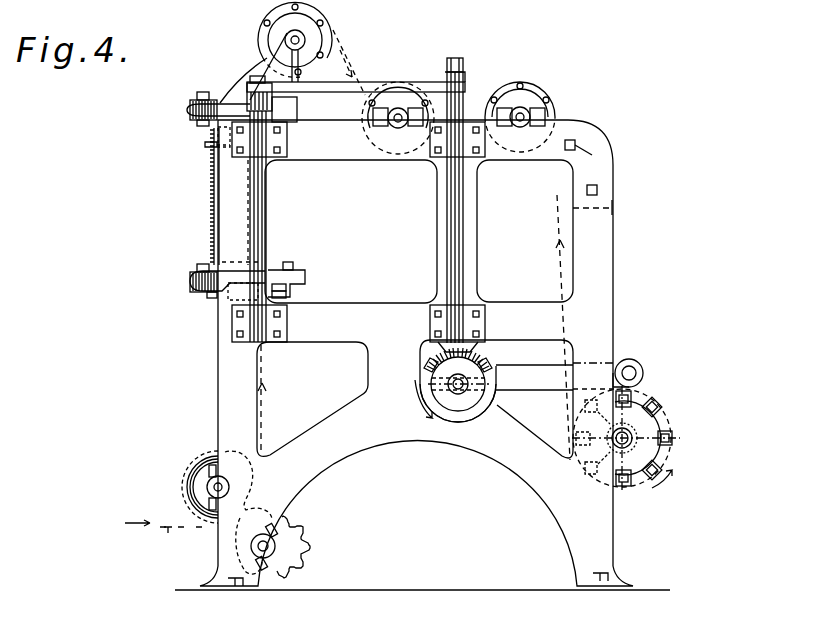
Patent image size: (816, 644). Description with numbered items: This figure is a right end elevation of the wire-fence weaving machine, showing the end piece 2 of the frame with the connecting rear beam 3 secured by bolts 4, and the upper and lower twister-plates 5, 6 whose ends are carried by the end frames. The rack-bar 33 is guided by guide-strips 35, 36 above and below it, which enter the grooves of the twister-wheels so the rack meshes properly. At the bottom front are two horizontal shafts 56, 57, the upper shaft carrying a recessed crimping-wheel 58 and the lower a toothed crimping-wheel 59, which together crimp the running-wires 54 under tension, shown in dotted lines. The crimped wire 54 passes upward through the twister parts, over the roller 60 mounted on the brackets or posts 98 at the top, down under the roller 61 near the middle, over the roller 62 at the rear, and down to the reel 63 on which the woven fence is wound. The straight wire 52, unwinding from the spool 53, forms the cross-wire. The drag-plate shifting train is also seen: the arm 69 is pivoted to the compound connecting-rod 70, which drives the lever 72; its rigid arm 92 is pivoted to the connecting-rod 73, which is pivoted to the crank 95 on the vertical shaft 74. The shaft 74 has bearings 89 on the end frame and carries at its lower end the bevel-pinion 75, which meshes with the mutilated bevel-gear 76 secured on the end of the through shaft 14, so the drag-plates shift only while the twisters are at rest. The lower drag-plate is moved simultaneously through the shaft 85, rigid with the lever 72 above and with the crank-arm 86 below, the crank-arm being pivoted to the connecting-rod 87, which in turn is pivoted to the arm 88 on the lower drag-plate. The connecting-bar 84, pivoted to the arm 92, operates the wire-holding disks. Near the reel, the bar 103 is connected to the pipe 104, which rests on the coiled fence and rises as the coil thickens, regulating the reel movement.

The end piece 2 is at (614, 268).
The connecting rear beam 3 is at (615, 207).
The bolts 4 is at (590, 185).
The upper twister-plate 5 is at (292, 113).
The lower twister-plate 6 is at (294, 295).
The shaft 14 is at (457, 394).
The rack-bar 33 is at (279, 289).
The guide-strip 35 is at (278, 278).
The guide-strip 36 is at (281, 297).
The straight wire 52 is at (213, 190).
The spool 53 is at (205, 145).
The crimped wire 54 is at (335, 375).
The shaft 56 is at (230, 487).
The shaft 57 is at (255, 547).
The crimping-wheel 58 is at (194, 460).
The crimping-wheel 59 is at (306, 549).
The roller 60 is at (332, 28).
The roller 61 is at (372, 118).
The roller 62 is at (527, 83).
The reel 63 is at (676, 438).
The arm 69 is at (213, 100).
The compound connecting-rod 70 is at (188, 114).
The lever 72 is at (190, 128).
The connecting-rod 73 is at (362, 83).
The shaft 74 is at (467, 206).
The bevel-pinion 75 is at (473, 362).
The mutilated bevel-gear 76 is at (487, 406).
The connecting-bar 84 is at (272, 103).
The shaft 85 is at (268, 207).
The crank-arm 86 is at (244, 264).
The connecting-rod 87 is at (191, 284).
The arm 88 is at (213, 292).
The bearings 89 is at (256, 152).
The rigid arm 92 is at (250, 98).
The crank 95 is at (467, 110).
The brackets or posts 98 is at (267, 58).
The bar 103 is at (534, 377).
The pipe 104 is at (641, 367).